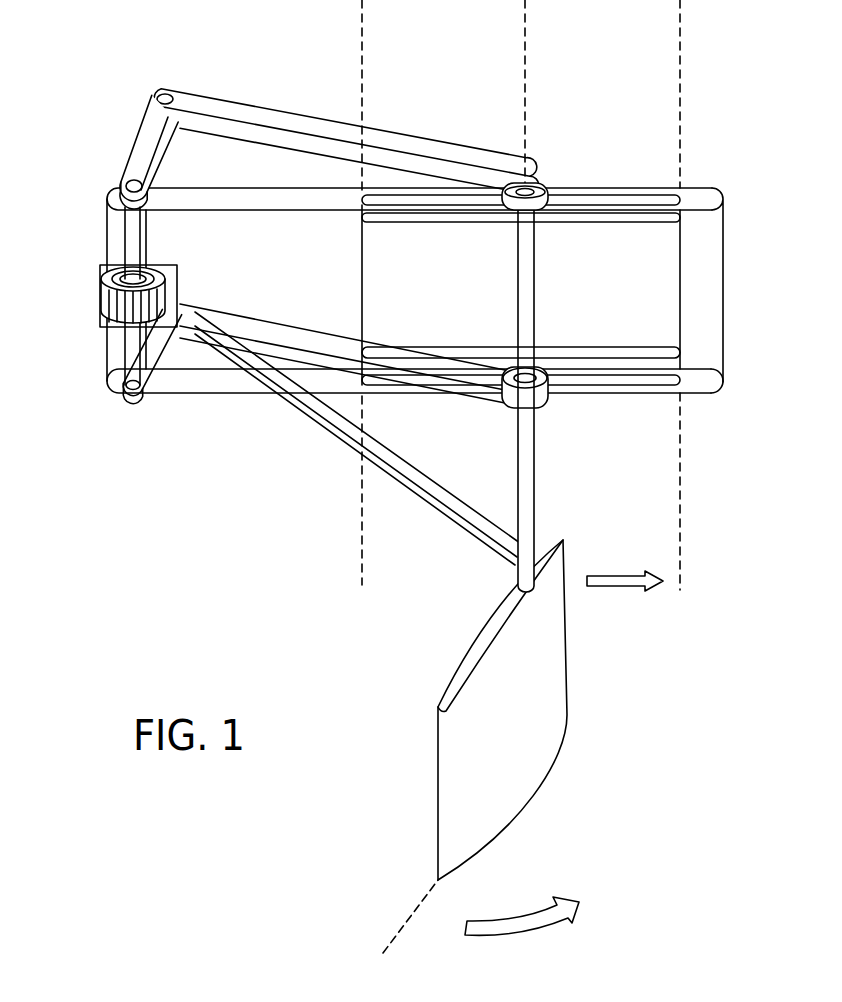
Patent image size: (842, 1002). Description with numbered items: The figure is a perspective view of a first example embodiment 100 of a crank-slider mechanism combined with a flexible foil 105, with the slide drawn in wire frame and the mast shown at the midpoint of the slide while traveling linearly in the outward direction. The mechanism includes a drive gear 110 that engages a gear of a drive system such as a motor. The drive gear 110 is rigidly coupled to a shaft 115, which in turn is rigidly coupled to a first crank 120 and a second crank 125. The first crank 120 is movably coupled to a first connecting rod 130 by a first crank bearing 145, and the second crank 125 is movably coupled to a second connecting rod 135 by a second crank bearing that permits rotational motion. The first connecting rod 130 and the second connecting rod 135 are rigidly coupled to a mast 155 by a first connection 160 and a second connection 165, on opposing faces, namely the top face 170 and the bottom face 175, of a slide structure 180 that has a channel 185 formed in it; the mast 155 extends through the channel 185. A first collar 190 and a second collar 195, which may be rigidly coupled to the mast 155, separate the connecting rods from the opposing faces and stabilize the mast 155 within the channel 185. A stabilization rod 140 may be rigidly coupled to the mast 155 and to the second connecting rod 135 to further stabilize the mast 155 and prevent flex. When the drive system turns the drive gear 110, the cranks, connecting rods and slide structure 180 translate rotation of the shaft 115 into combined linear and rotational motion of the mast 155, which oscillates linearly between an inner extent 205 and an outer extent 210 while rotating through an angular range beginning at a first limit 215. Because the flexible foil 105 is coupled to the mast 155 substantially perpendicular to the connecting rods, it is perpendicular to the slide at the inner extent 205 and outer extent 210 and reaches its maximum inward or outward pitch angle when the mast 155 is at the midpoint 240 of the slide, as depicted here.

The first example embodiment 100 is at (740, 52).
The flexible foil 105 is at (567, 637).
The drive gear 110 is at (105, 280).
The shaft 115 is at (127, 232).
The first crank 120 is at (140, 141).
The second crank 125 is at (162, 350).
The first connecting rod 130 is at (316, 125).
The second connecting rod 135 is at (258, 338).
The stabilization rod 140 is at (302, 427).
The first crank bearing 145 is at (168, 95).
The mast 155 is at (531, 486).
The first connection 160 is at (540, 183).
The second connection 165 is at (547, 418).
The top face 170 is at (703, 180).
The bottom face 175 is at (700, 410).
The slide structure 180 is at (266, 259).
The channel 185 is at (651, 198).
The first collar 190 is at (555, 188).
The second collar 195 is at (543, 400).
The inner extent 205 is at (363, 556).
The outer extent 210 is at (681, 556).
The first limit 215 is at (405, 927).
The midpoint 240 is at (527, 57).